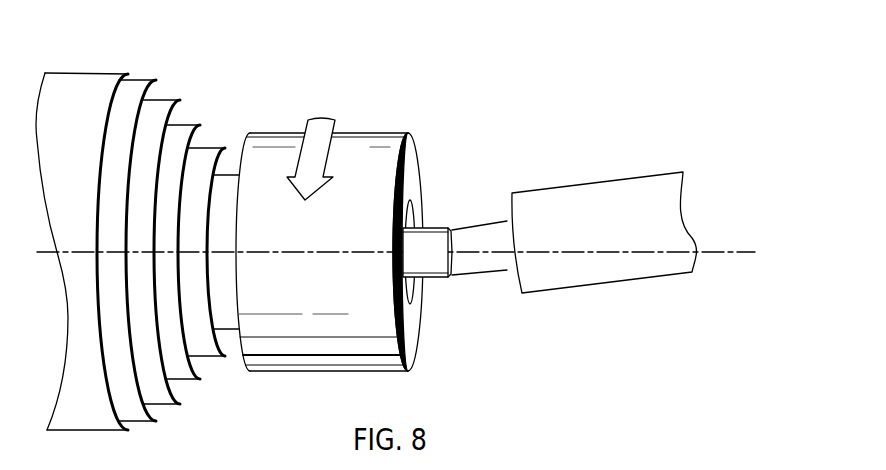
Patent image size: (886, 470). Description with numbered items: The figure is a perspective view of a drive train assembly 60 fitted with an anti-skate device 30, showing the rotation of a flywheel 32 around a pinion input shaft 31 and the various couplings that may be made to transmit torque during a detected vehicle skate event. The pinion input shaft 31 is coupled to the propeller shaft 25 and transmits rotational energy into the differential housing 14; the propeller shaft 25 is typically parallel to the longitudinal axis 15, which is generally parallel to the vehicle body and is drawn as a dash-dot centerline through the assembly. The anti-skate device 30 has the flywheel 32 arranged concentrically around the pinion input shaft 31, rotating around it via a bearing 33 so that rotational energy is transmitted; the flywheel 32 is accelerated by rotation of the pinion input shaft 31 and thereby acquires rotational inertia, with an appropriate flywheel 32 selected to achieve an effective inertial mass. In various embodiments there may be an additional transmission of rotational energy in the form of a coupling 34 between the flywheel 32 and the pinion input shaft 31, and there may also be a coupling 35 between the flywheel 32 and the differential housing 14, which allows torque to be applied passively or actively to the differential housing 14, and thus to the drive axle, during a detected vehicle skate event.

The drive train assembly 60 is at (89, 33).
The differential housing 14 is at (152, 85).
The anti-skate device 30 is at (289, 104).
The flywheel 32 is at (386, 132).
The bearing 33 is at (407, 221).
The pinion input shaft 31 is at (428, 270).
The propeller shaft 25 is at (583, 185).
The longitudinal axis 15 is at (735, 252).
The coupling 34 is at (440, 329).
The coupling 35 is at (226, 366).